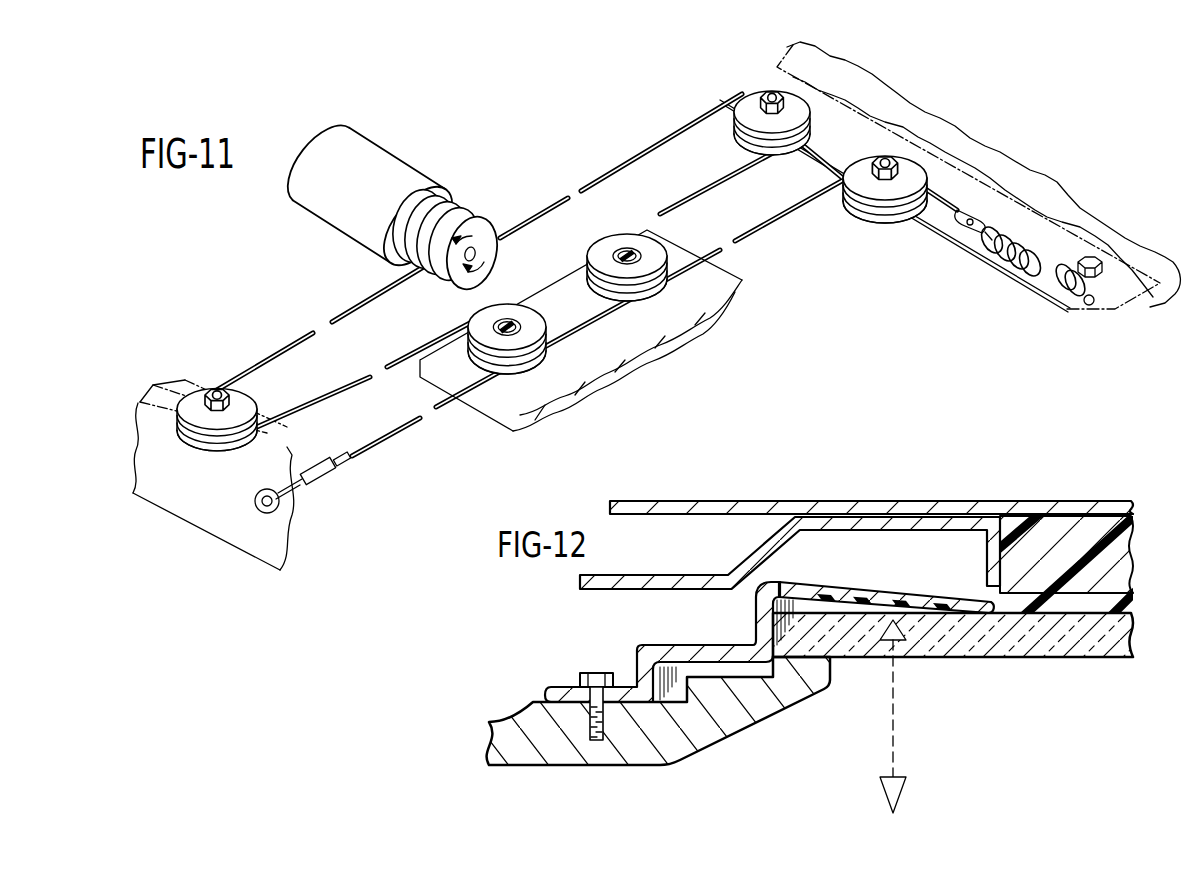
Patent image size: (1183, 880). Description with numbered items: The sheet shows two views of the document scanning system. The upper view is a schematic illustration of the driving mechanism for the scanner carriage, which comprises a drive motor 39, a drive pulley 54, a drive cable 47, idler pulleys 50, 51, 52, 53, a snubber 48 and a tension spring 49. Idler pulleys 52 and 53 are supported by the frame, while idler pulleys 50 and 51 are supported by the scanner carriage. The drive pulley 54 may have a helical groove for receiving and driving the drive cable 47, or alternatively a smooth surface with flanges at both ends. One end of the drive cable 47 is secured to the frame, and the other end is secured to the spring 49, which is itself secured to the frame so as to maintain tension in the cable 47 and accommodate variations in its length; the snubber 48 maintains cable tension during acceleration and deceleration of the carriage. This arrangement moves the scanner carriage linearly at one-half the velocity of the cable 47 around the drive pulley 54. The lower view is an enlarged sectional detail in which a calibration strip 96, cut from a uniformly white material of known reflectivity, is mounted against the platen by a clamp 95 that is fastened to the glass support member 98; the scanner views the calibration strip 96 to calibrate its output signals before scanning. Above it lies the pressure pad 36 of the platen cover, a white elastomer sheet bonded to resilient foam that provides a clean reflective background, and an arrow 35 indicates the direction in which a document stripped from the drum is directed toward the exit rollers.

In FIG. 11, the drive motor 39 is at (423, 150).
In FIG. 11, the drive pulley 54 is at (480, 218).
In FIG. 11, the drive cable 47 is at (547, 209).
In FIG. 11, the idler pulley 52 is at (740, 140).
In FIG. 11, the snubber 48 is at (875, 222).
In FIG. 11, the tension spring 49 is at (988, 252).
In FIG. 11, the idler pulley 50 is at (613, 302).
In FIG. 11, the idler pulley 51 is at (543, 313).
In FIG. 11, the idler pulley 53 is at (250, 392).
In FIG. 12, the pressure pad 36 is at (1131, 580).
In FIG. 12, the arrow 35 is at (1095, 652).
In FIG. 12, the clamp 95 is at (890, 590).
In FIG. 12, the calibration strip 96 is at (850, 601).
In FIG. 12, the glass support member 98 is at (738, 718).